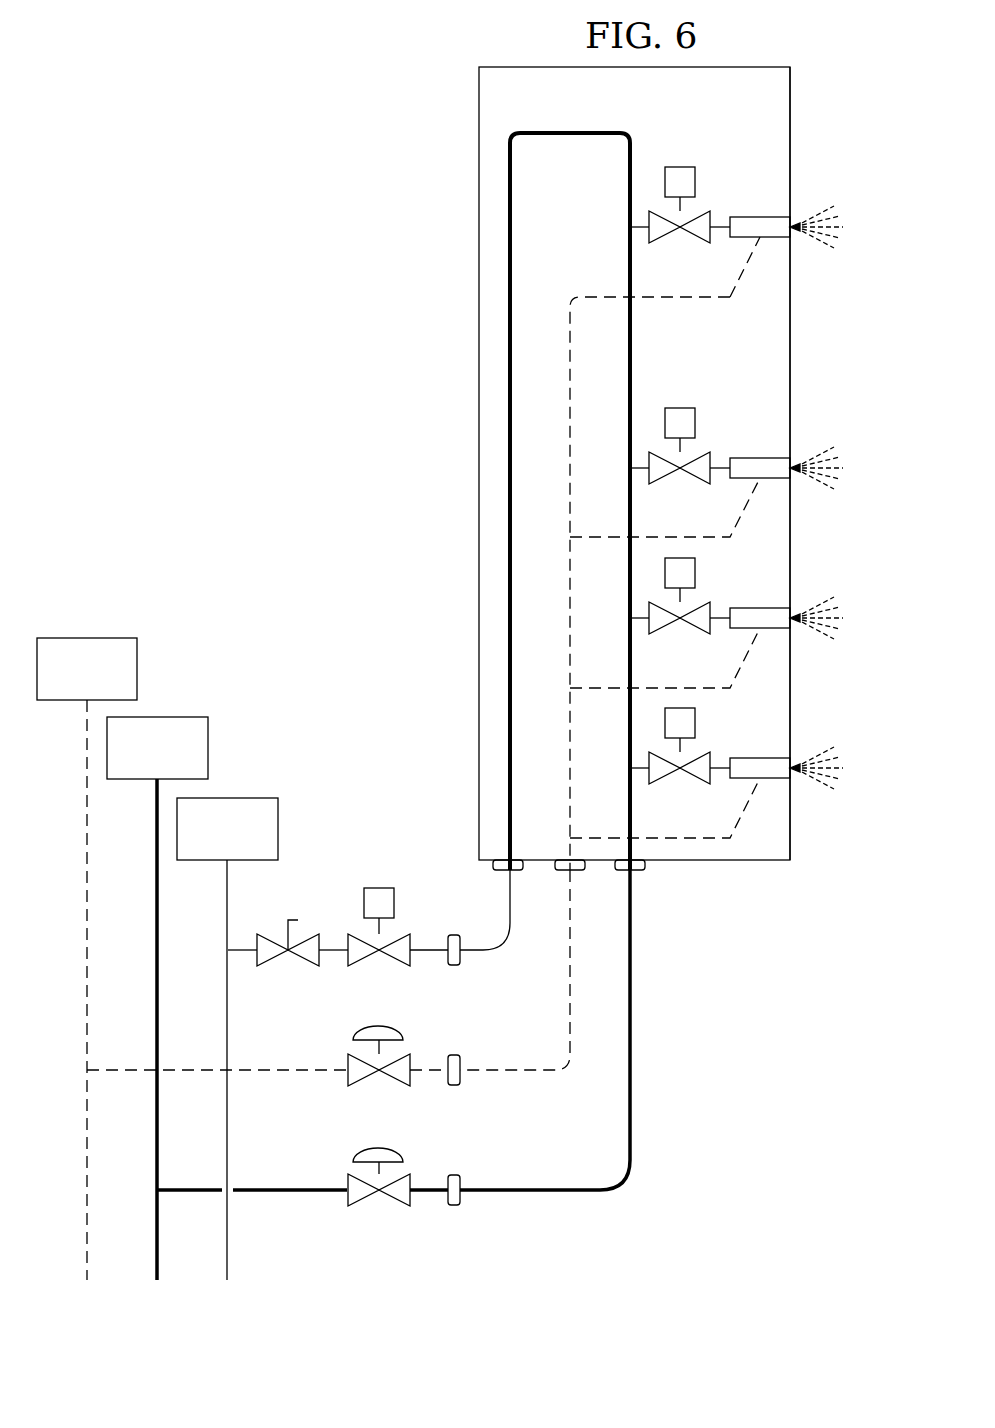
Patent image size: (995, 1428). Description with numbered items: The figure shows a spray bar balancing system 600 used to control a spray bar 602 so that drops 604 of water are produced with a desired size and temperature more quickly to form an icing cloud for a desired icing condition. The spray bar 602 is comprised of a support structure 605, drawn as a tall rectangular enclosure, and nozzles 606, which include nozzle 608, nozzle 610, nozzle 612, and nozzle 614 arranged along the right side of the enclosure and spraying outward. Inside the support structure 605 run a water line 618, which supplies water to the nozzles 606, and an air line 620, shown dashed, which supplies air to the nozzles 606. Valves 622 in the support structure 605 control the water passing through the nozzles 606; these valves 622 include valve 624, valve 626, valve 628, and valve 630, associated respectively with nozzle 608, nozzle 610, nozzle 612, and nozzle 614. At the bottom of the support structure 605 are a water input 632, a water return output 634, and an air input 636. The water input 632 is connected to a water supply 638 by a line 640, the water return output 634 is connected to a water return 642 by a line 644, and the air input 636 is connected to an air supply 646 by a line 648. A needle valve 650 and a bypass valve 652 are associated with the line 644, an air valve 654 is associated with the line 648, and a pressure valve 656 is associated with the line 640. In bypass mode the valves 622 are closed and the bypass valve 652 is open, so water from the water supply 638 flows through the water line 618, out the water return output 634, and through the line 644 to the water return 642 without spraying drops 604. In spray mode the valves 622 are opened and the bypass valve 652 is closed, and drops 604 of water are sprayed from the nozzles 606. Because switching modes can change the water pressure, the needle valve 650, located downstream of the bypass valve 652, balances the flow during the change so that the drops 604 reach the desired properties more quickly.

The spray bar balancing system 600 is at (244, 154).
The spray bar 602 is at (790, 108).
The drops of water 604 is at (822, 596).
The support structure 605 is at (759, 64).
The nozzles 606 is at (806, 391).
The nozzle 608 is at (796, 214).
The nozzle 610 is at (796, 455).
The nozzle 612 is at (796, 626).
The nozzle 614 is at (796, 776).
The water line 618 is at (570, 132).
The air line 620 is at (572, 296).
The valves 622 is at (690, 144).
The valve 624 is at (694, 241).
The valve 626 is at (694, 482).
The valve 628 is at (694, 632).
The valve 630 is at (694, 782).
The water input 632 is at (640, 872).
The water return output 634 is at (520, 872).
The air input 636 is at (580, 872).
The water supply 638 is at (137, 780).
The line 640 is at (428, 1192).
The water return 642 is at (210, 862).
The line 644 is at (428, 952).
The air supply 646 is at (65, 701).
The line 648 is at (428, 1072).
The needle valve 650 is at (275, 962).
The bypass valve 652 is at (365, 962).
The air valve 654 is at (365, 1082).
The pressure valve 656 is at (365, 1202).